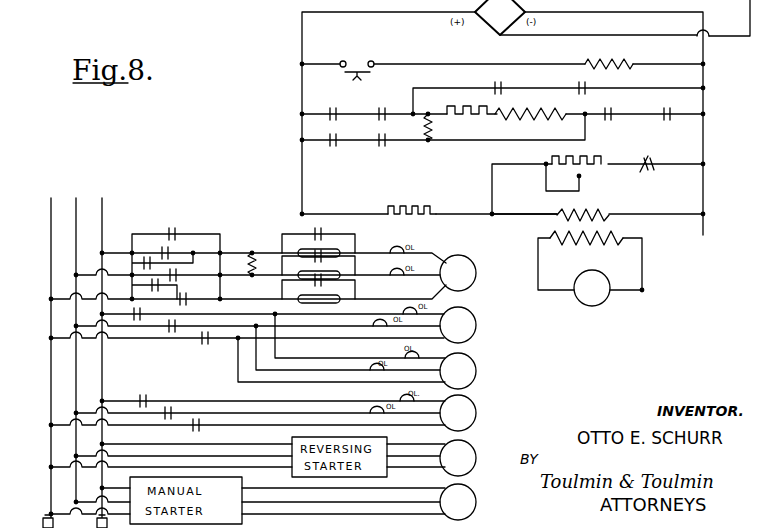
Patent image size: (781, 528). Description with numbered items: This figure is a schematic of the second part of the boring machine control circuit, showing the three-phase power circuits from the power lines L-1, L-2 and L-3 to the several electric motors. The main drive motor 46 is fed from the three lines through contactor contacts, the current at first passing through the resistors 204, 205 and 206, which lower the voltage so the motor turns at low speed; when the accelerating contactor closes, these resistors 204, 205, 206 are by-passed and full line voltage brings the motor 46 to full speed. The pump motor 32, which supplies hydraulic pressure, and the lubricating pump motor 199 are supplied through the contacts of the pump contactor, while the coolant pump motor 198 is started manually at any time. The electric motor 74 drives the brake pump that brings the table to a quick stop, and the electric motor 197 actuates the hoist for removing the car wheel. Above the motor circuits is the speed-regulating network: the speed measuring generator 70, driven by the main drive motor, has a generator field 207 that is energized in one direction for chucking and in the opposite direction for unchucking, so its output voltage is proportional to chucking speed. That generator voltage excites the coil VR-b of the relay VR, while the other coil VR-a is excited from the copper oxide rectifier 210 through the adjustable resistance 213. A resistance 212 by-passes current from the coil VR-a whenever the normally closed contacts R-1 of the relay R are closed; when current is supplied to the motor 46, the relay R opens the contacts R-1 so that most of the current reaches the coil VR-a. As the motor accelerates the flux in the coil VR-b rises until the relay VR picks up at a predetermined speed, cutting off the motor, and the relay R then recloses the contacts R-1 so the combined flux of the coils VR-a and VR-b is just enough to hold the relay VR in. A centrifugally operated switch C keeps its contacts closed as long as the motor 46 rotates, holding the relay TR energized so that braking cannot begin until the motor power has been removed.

The copper oxide rectifier 210 is at (612, 18).
The generator field 207 is at (530, 128).
The resistance 212 is at (583, 160).
The adjustable resistance 213 is at (388, 210).
The resistor 204 is at (340, 250).
The resistor 205 is at (340, 279).
The resistor 206 is at (340, 303).
The main drive motor 46 is at (468, 286).
The pump motor 32 is at (466, 339).
The lubricating pump motor 199 is at (468, 384).
The speed measuring generator 70 is at (590, 306).
The electric motor 74 is at (468, 426).
The electric motor 197 is at (468, 471).
The coolant pump motor 198 is at (468, 515).
The centrifugally operated switch C is at (361, 65).
The relay TR is at (608, 59).
The relay R is at (256, 268).
The normally closed contacts R-1 is at (650, 158).
The relay VR is at (524, 226).
The coil VR-a is at (617, 219).
The coil VR-b is at (615, 250).
The power line L-1 is at (48, 210).
The power line L-2 is at (75, 208).
The power line L-3 is at (106, 212).